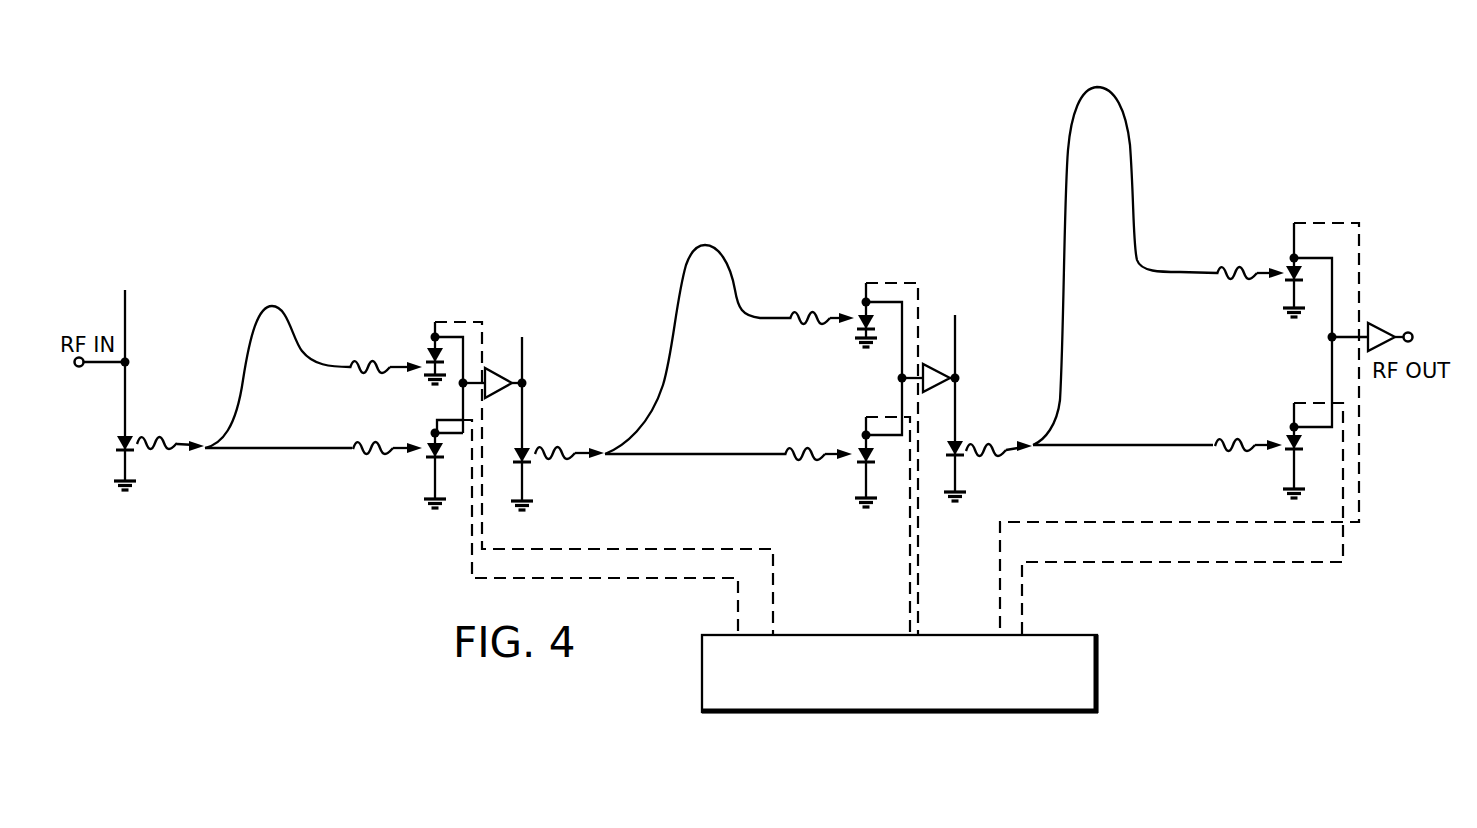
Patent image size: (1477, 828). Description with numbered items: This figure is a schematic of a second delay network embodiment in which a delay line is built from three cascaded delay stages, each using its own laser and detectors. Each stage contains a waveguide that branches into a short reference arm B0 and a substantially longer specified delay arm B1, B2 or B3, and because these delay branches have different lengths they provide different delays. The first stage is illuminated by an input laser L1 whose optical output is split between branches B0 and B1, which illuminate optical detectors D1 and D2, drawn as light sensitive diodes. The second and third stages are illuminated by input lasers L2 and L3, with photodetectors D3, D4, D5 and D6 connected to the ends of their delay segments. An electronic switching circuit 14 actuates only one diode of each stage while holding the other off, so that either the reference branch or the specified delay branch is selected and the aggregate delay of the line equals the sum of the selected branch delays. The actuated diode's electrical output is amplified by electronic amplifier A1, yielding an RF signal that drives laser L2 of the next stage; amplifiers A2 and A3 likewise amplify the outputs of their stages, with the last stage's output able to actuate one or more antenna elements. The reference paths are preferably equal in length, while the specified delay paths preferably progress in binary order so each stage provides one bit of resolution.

The electronic switching circuit 14 is at (1078, 665).
The input laser L1 is at (112, 390).
The input laser L2 is at (511, 423).
The input laser L3 is at (946, 408).
The photodetector D1 is at (432, 464).
The photodetector D2 is at (420, 353).
The photodetector D3 is at (880, 462).
The photodetector D4 is at (853, 320).
The photodetector D5 is at (1310, 450).
The photodetector D6 is at (1281, 270).
The electronic amplifier A1 is at (493, 371).
The electronic amplifier A2 is at (929, 363).
The electronic amplifier A3 is at (1370, 322).
The reference arm B0 is at (709, 464).
The specified delay arm B1 is at (277, 363).
The specified delay arm B2 is at (697, 331).
The specified delay arm B3 is at (1125, 251).